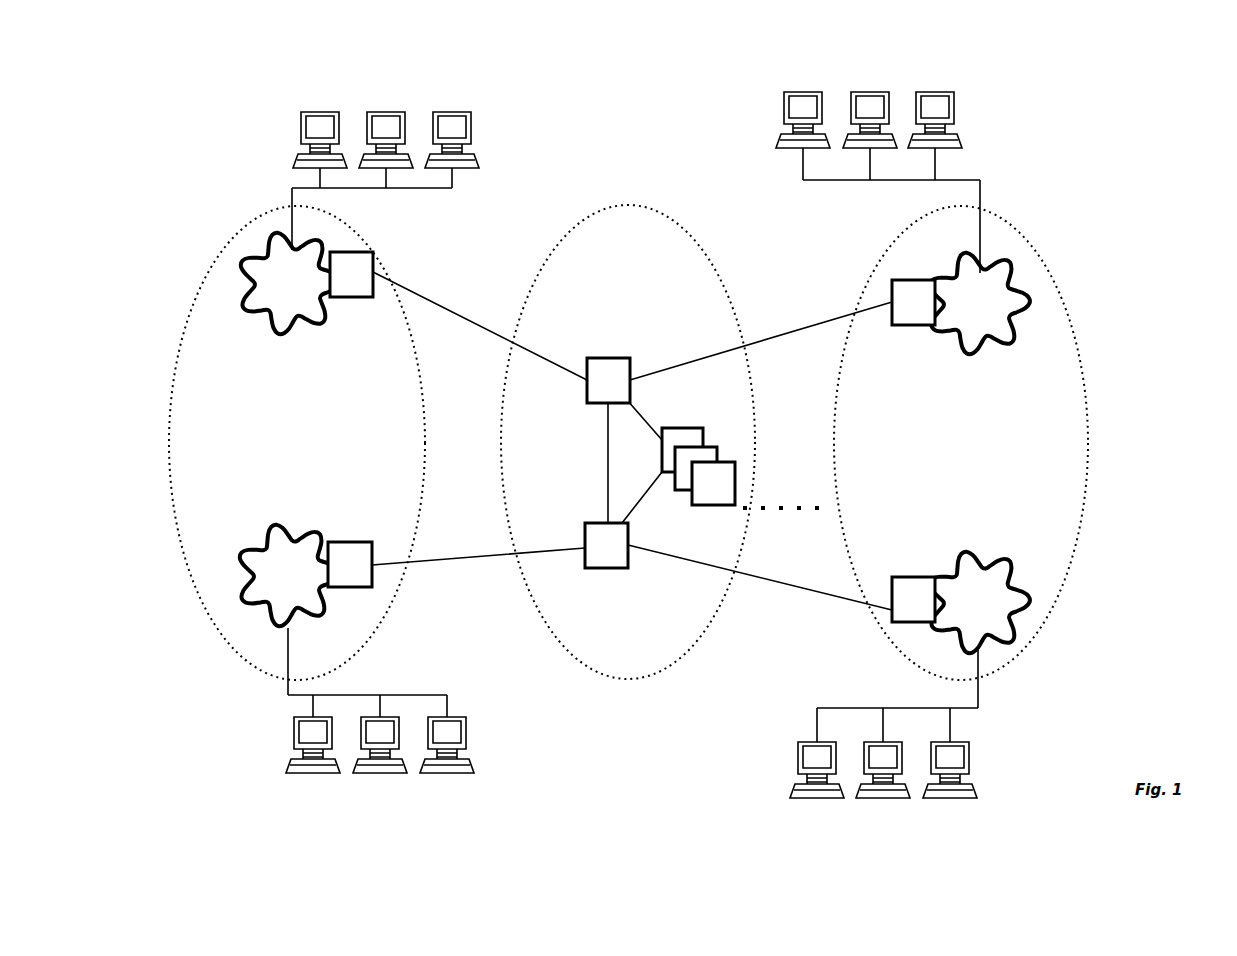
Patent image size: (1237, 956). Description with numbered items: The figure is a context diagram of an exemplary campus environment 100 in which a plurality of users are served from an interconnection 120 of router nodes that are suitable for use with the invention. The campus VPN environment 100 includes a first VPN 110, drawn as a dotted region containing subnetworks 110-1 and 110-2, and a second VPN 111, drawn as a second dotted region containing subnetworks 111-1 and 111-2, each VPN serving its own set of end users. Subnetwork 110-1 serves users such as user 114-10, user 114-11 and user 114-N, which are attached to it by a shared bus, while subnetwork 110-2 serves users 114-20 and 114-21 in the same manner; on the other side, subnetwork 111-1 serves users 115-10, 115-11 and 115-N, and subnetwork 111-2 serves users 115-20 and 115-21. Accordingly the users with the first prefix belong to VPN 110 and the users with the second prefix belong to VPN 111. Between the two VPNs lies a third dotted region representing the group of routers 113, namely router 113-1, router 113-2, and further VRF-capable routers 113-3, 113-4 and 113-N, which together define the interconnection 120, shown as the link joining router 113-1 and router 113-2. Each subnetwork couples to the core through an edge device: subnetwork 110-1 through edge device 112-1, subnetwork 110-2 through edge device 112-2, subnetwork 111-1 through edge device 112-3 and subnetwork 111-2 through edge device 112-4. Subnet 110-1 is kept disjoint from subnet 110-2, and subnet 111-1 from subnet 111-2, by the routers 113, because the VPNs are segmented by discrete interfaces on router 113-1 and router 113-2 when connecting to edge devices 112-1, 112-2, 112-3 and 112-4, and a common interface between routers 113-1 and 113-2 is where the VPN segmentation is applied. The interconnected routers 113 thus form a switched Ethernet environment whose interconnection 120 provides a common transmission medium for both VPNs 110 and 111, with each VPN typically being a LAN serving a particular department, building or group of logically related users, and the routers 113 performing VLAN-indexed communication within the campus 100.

The campus environment 100 is at (657, 135).
The VPN 110 is at (205, 608).
The subnetwork 110-1 is at (292, 337).
The subnetwork 110-2 is at (291, 528).
The VPN 111 is at (1052, 610).
The subnetwork 111-1 is at (940, 342).
The subnetwork 111-2 is at (978, 565).
The edge device 112-1 is at (376, 262).
The edge device 112-2 is at (374, 578).
The edge device 112-3 is at (892, 292).
The edge device 112-4 is at (892, 588).
The group of routers 113 is at (625, 680).
The router 113-1 is at (601, 358).
The router 113-2 is at (607, 568).
The router 113-3 is at (684, 428).
The router 113-4 is at (719, 447).
The router 113-N is at (713, 505).
The user 114-10 is at (301, 112).
The user 114-11 is at (368, 112).
The user 114-N is at (434, 112).
The user 114-20 is at (337, 774).
The user 114-21 is at (404, 774).
The user 115-10 is at (843, 72).
The user 115-11 is at (888, 92).
The user 115-N is at (953, 92).
The user 115-20 is at (792, 798).
The user 115-21 is at (858, 798).
The interconnection 120 is at (607, 460).